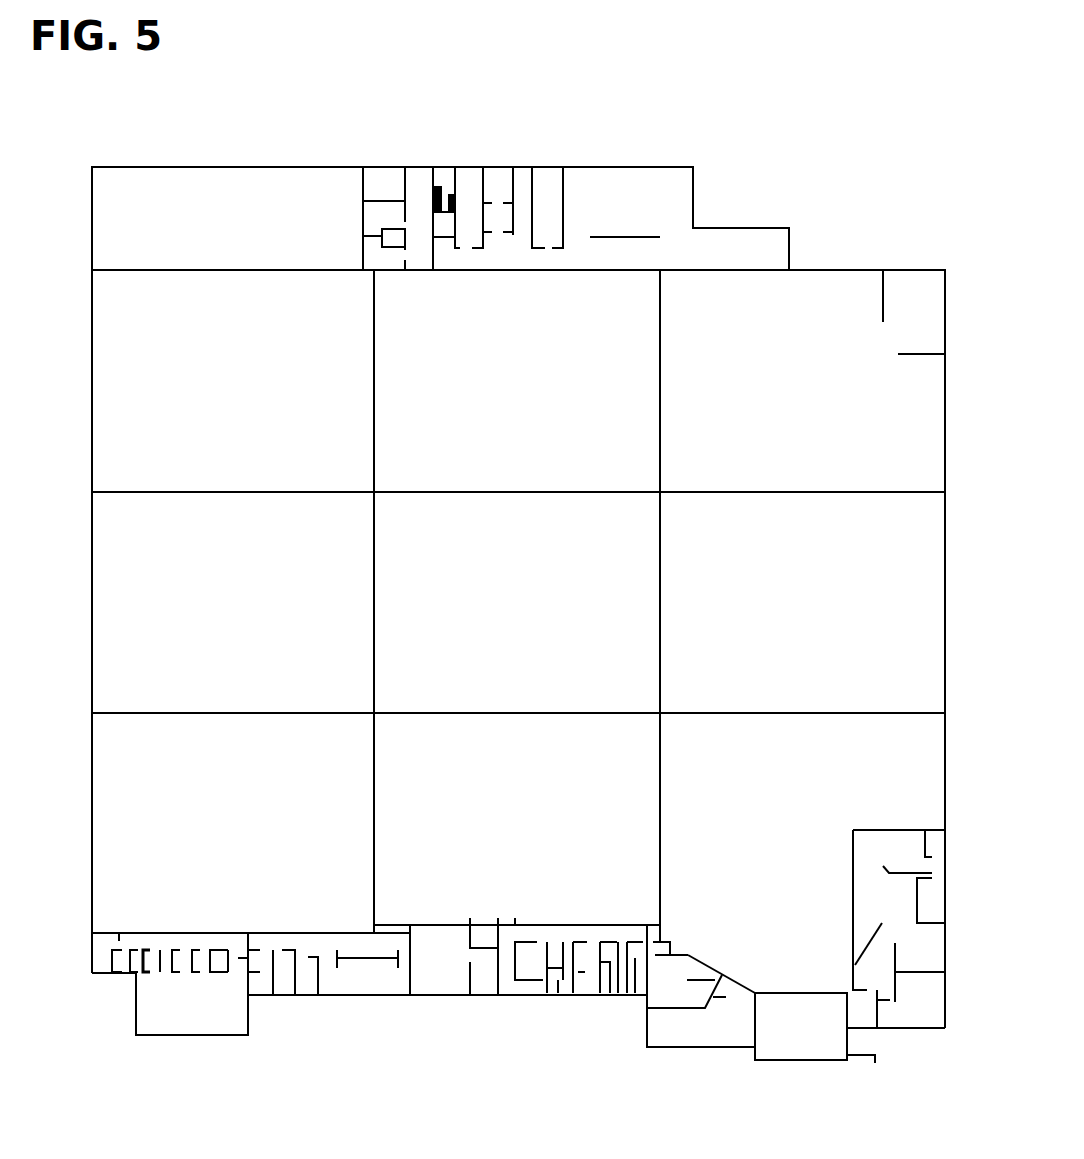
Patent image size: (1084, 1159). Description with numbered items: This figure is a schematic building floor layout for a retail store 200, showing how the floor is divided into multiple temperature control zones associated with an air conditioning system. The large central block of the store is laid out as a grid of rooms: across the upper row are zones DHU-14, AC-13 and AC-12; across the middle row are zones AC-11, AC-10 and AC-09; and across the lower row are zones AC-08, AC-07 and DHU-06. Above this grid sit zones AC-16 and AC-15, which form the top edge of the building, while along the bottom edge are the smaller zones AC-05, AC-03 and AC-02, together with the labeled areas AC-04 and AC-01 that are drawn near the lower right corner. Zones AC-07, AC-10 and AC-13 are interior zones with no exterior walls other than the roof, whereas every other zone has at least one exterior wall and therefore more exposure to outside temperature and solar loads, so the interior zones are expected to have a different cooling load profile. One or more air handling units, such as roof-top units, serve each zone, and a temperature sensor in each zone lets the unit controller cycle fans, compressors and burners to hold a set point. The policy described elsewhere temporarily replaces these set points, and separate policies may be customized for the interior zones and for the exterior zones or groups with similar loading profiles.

The retail store 200 is at (452, 128).
The temperature control zone AC-16 is at (248, 218).
The temperature control zone AC-15 is at (611, 218).
The temperature control zone DHU-14 is at (233, 381).
The temperature control zone AC-13 is at (517, 381).
The temperature control zone AC-12 is at (802, 381).
The temperature control zone AC-11 is at (233, 602).
The temperature control zone AC-10 is at (517, 602).
The temperature control zone AC-09 is at (802, 602).
The temperature control zone AC-08 is at (233, 823).
The temperature control zone AC-07 is at (517, 819).
The temperature control zone DHU-06 is at (799, 870).
The temperature control zone AC-05 is at (376, 976).
The air conditioning zone AC-04 is at (746, 963).
The temperature control zone AC-03 is at (701, 1011).
The temperature control zone AC-02 is at (815, 1028).
The air conditioning zone AC-01 is at (837, 876).